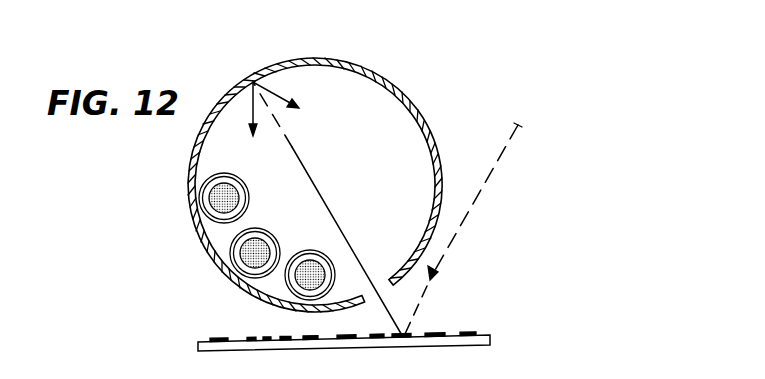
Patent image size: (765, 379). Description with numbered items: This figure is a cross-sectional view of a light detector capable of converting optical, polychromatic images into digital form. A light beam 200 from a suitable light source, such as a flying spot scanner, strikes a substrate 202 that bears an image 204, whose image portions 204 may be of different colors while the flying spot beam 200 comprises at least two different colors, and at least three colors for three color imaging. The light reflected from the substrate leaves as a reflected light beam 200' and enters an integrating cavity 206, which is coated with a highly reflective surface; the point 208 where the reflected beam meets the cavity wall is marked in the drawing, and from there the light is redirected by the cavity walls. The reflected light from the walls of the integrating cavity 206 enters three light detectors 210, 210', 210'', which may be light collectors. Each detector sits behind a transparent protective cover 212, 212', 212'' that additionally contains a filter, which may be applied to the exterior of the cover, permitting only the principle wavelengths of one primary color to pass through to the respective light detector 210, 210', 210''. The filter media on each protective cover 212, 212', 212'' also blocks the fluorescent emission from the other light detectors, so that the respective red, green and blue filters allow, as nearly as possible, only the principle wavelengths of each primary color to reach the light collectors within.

The light beam 200 is at (479, 228).
The reflected light beam 200' is at (328, 209).
The substrate 202 is at (490, 336).
The image 204 is at (248, 340).
The integrating cavity 206 is at (406, 97).
The reflection point 208 is at (253, 82).
The light detector 210 is at (197, 193).
The light detector 210' is at (212, 253).
The light detector 210'' is at (356, 264).
The transparent protective cover 212 is at (250, 182).
The transparent protective cover 212' is at (273, 230).
The transparent protective cover 212'' is at (314, 258).